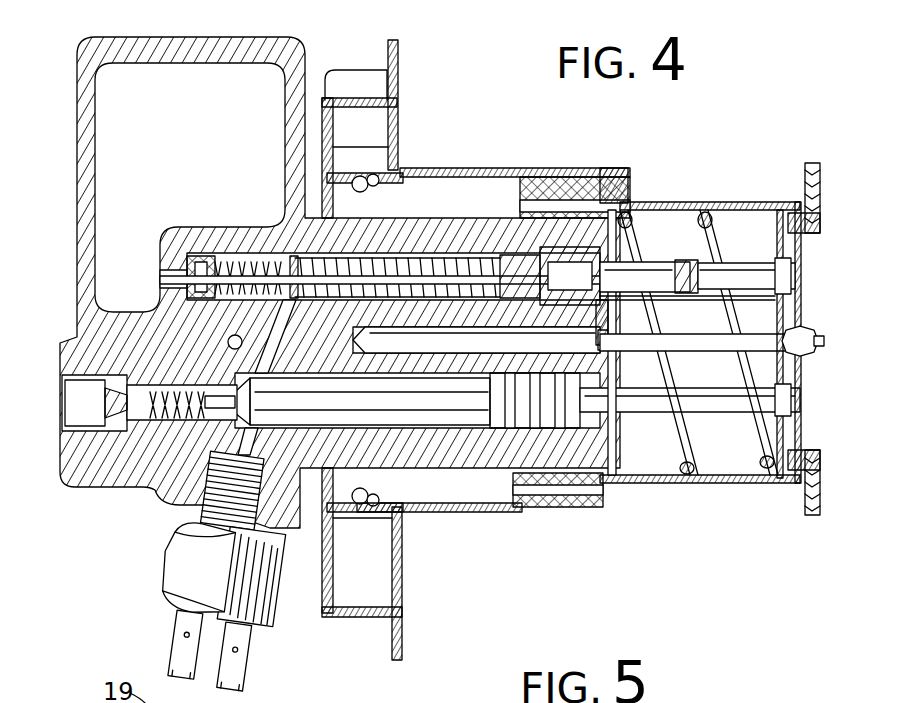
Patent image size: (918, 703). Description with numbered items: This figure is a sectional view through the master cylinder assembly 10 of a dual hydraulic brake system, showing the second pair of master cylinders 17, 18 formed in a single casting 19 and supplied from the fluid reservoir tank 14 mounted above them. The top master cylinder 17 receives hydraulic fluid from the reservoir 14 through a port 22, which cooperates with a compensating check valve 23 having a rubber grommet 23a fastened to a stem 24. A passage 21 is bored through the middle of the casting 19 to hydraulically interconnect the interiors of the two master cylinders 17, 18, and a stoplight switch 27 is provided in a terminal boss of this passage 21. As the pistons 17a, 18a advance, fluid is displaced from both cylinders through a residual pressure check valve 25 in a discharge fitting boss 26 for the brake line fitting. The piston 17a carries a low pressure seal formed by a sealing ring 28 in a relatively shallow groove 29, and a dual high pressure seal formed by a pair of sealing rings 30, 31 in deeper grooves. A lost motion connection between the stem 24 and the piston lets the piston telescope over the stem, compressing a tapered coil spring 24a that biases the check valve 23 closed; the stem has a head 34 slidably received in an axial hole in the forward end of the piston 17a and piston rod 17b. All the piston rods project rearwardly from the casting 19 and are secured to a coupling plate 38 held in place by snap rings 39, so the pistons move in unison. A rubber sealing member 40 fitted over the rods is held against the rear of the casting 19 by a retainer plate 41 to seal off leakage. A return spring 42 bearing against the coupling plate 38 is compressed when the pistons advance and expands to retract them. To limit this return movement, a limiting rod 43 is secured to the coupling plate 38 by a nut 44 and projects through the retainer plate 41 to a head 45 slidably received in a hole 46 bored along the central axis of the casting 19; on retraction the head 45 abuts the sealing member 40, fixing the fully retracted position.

The master cylinder assembly 10 is at (440, 155).
The fluid reservoir tank 14 is at (272, 37).
The master cylinder 17 is at (440, 252).
The piston 17a is at (518, 254).
The piston rod 17b is at (764, 254).
The master cylinder 18 is at (455, 430).
The piston 18a is at (502, 504).
The casting 19 is at (143, 490).
The passage 21 is at (270, 340).
The port 22 is at (165, 278).
The compensating check valve 23 is at (222, 252).
The rubber grommet 23a is at (190, 255).
The stem 24 is at (268, 252).
The tapered coil spring 24a is at (292, 255).
The residual pressure check valve 25 is at (160, 395).
The discharge fitting boss 26 is at (64, 390).
The stoplight switch 27 is at (275, 604).
The sealing ring 28 is at (630, 230).
The groove 29 is at (604, 332).
The sealing ring 30 is at (520, 206).
The sealing ring 31 is at (546, 250).
The head 34 is at (476, 341).
The coupling plate 38 is at (785, 315).
The snap rings 39 is at (785, 262).
The rubber sealing member 40 is at (620, 262).
The retainer plate 41 is at (640, 302).
The return spring 42 is at (748, 212).
The limiting rod 43 is at (678, 352).
The nut 44 is at (805, 352).
The head 45 is at (596, 340).
The hole 46 is at (400, 352).